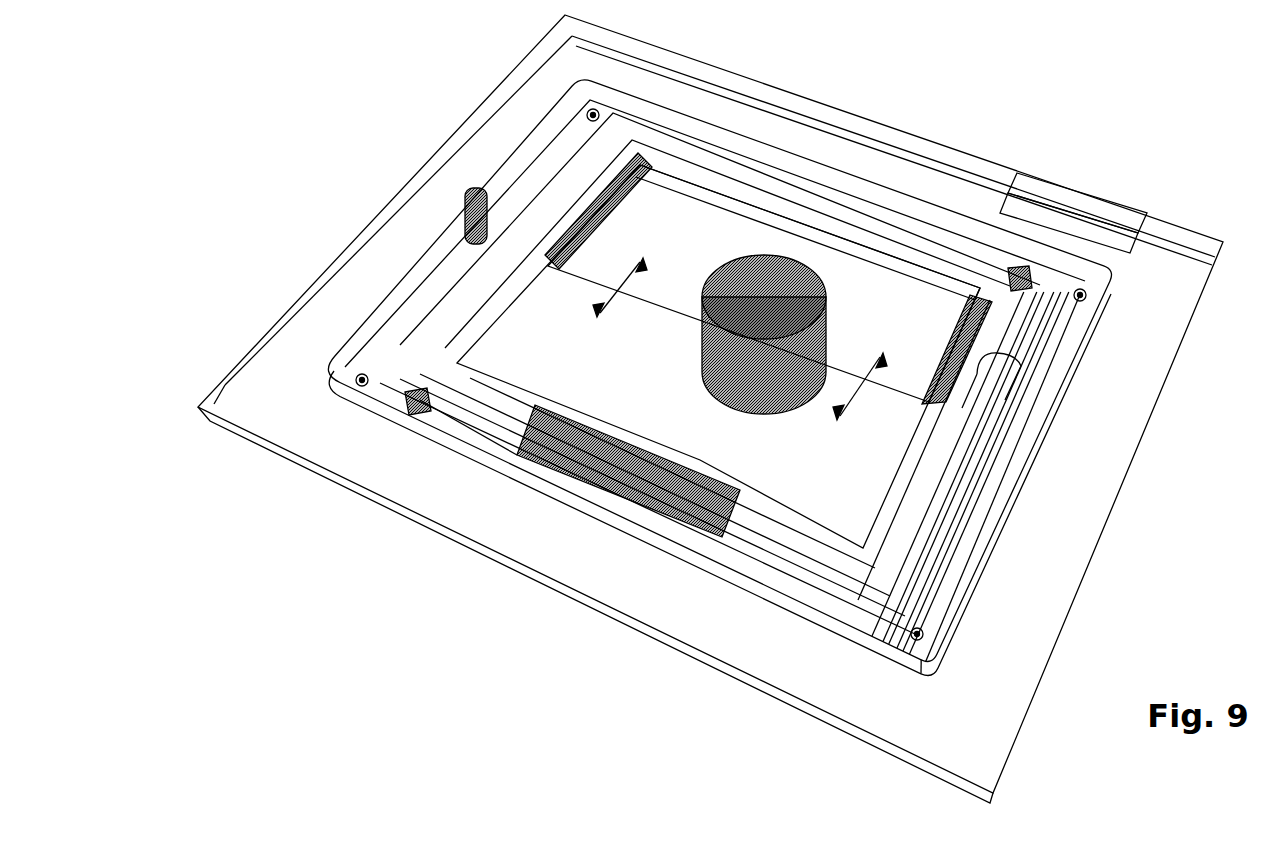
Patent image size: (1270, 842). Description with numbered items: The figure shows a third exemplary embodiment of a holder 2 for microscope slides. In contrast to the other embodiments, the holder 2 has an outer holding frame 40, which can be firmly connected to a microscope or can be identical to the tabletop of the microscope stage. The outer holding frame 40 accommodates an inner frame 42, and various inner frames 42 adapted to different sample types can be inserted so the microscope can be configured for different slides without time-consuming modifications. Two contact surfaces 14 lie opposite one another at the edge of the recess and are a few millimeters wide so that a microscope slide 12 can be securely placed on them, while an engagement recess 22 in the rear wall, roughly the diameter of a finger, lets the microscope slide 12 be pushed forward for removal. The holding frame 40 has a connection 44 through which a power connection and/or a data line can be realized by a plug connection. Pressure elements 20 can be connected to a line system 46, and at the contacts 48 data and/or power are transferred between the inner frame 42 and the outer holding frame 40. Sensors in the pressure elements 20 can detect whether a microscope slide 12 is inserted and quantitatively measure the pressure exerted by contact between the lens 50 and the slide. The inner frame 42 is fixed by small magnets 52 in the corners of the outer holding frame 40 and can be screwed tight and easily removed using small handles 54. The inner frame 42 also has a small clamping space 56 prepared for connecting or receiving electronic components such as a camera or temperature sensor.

The holder 2 is at (250, 296).
The microscope slide 12 is at (697, 220).
The contact surfaces 14 is at (518, 292).
The pressure elements 20 is at (580, 212).
The engagement recess 22 is at (800, 213).
The outer holding frame 40 is at (923, 172).
The inner frame 42 is at (482, 437).
The connection 44 is at (1050, 195).
The line system 46 is at (975, 372).
The contacts 48 is at (1022, 275).
The lens 50 is at (757, 363).
The magnets 52 is at (917, 637).
The handles 54 is at (463, 193).
The clamping space 56 is at (650, 485).